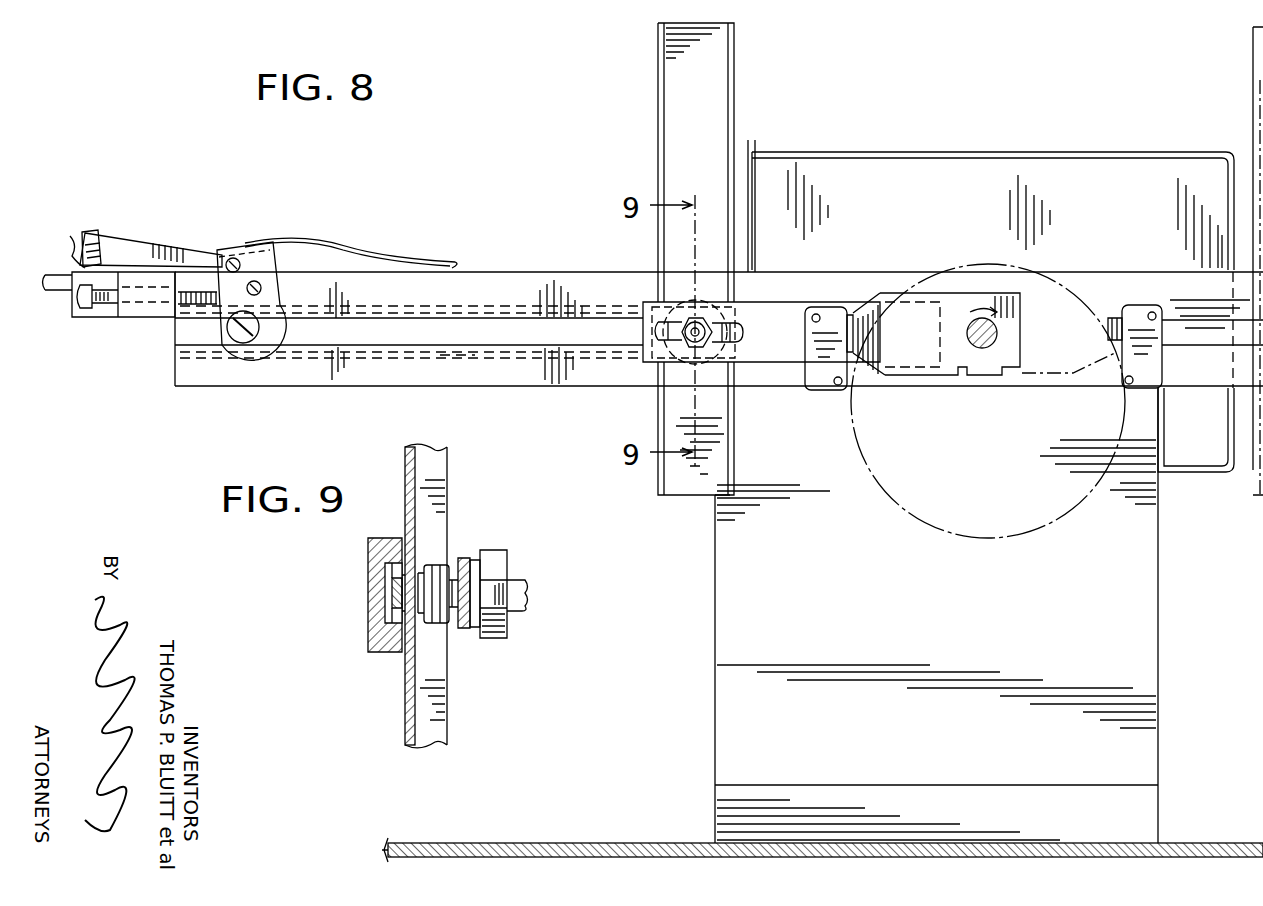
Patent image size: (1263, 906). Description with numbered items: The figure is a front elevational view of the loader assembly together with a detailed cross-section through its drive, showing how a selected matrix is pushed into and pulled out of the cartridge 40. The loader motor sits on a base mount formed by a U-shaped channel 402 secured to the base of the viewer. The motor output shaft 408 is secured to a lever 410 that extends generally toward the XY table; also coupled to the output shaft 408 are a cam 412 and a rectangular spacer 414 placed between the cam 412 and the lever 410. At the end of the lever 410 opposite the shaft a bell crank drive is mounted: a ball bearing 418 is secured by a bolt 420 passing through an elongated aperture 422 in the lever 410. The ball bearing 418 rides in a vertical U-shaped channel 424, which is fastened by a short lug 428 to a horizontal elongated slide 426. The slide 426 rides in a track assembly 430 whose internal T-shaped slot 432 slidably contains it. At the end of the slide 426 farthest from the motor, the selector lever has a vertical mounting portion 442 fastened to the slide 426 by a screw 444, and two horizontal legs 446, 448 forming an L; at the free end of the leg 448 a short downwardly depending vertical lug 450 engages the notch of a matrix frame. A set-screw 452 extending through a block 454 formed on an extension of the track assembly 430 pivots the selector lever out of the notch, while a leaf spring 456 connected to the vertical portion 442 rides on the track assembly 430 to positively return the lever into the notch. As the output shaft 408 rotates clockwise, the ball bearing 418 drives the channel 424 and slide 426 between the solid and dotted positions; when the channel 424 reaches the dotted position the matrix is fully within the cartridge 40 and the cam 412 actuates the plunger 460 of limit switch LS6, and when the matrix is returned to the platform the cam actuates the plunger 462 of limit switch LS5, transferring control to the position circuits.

In FIG. 8, the cartridge 40 is at (905, 162).
In FIG. 8, the U-shaped channel 402 is at (888, 805).
In FIG. 8, the output shaft 408 is at (984, 348).
In FIG. 9, the output shaft 408 is at (522, 598).
In FIG. 8, the lever 410 is at (775, 302).
In FIG. 9, the lever 410 is at (463, 558).
In FIG. 8, the cam 412 is at (912, 295).
In FIG. 9, the cam 412 is at (500, 572).
In FIG. 8, the rectangular spacer 414 is at (940, 322).
In FIG. 9, the rectangular spacer 414 is at (475, 560).
In FIG. 8, the ball bearing 418 is at (645, 370).
In FIG. 9, the ball bearing 418 is at (445, 625).
In FIG. 8, the bolt 420 is at (665, 334).
In FIG. 9, the bolt 420 is at (420, 612).
In FIG. 8, the elongated aperture 422 is at (740, 337).
In FIG. 8, the vertical U-shaped channel 424 is at (672, 127).
In FIG. 9, the vertical U-shaped channel 424 is at (448, 463).
In FIG. 8, the horizontal elongated slide 426 is at (350, 330).
In FIG. 9, the horizontal elongated slide 426 is at (385, 572).
In FIG. 9, the short lug 428 is at (386, 616).
In FIG. 8, the track assembly 430 is at (603, 262).
In FIG. 8, the T-shaped slot 432 is at (462, 350).
In FIG. 9, the T-shaped slot 432 is at (385, 598).
In FIG. 8, the vertical mounting portion 442 is at (212, 338).
In FIG. 8, the screw 444 is at (233, 340).
In FIG. 8, the leg 446 is at (240, 248).
In FIG. 8, the leg 448 is at (115, 240).
In FIG. 8, the vertical lug 450 is at (95, 238).
In FIG. 8, the set-screw 452 is at (90, 312).
In FIG. 8, the block 454 is at (145, 320).
In FIG. 8, the leaf spring 456 is at (345, 247).
In FIG. 8, the plunger 460 is at (1108, 316).
In FIG. 8, the plunger 462 is at (856, 312).
In FIG. 8, the limit switch LS5 is at (818, 378).
In FIG. 8, the limit switch LS6 is at (1138, 384).